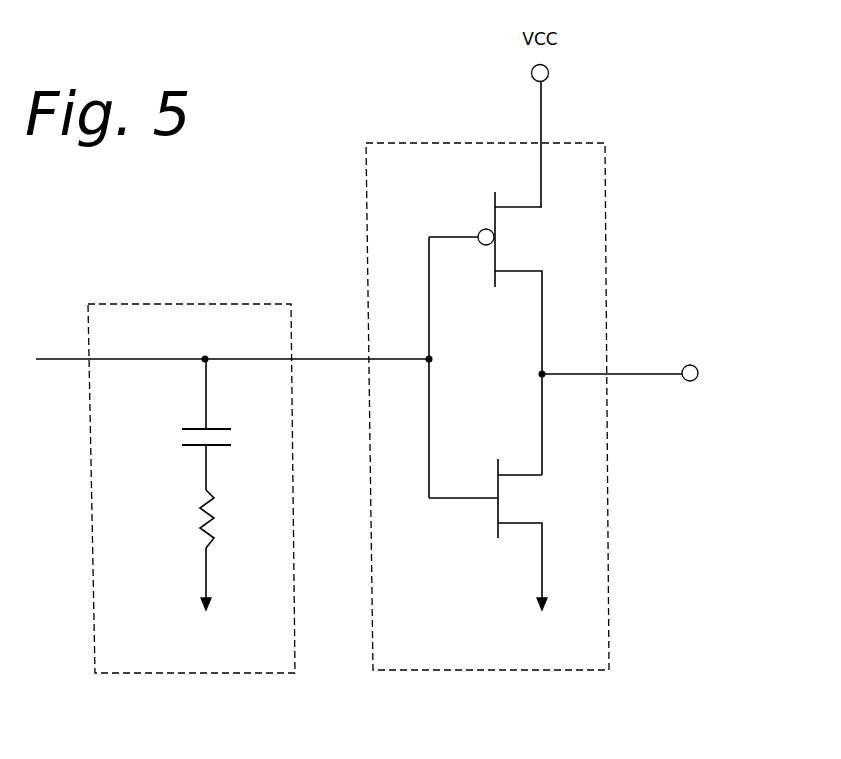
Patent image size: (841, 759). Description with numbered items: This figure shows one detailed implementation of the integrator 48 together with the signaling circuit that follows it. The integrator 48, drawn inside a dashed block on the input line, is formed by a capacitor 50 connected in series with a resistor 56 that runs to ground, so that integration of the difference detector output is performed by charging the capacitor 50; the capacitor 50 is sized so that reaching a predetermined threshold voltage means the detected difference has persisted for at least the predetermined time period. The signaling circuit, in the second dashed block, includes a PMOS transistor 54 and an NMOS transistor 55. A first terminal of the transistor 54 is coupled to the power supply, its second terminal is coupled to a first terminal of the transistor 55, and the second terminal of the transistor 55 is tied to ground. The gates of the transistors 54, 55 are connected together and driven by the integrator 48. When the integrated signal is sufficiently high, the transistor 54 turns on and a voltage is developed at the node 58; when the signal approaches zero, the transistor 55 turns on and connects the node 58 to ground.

The integrator 48 is at (179, 439).
The capacitor 50 is at (165, 424).
The transistor 54 is at (478, 342).
The transistor 55 is at (487, 534).
The resistor 56 is at (157, 550).
The node 58 is at (643, 342).